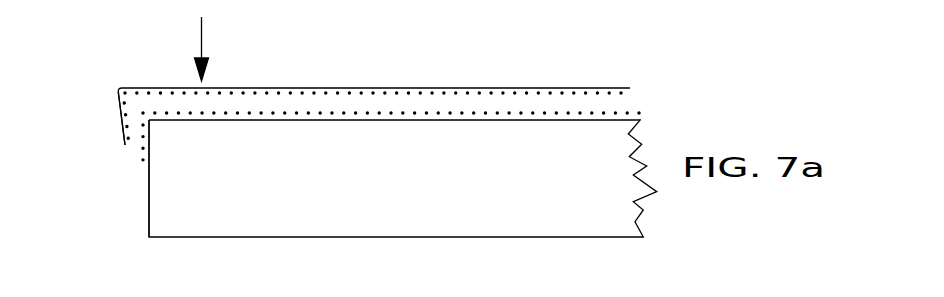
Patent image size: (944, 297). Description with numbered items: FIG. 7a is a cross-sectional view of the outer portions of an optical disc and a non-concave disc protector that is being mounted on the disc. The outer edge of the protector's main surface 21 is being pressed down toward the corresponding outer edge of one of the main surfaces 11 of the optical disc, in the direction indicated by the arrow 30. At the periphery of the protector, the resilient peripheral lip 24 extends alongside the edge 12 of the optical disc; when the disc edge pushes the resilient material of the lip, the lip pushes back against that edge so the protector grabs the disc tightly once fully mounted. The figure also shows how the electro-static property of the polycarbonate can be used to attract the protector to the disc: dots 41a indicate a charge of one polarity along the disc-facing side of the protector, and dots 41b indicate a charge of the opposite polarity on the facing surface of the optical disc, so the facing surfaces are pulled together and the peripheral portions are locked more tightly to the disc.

The main surface of optical disc 11 is at (570, 121).
The edge of optical disc 12 is at (148, 188).
The main surface of protector 21 is at (415, 87).
The peripheral lip 24 is at (118, 120).
The arrow 30 is at (214, 49).
The dots indicating charge of one polarity 41a is at (282, 89).
The dots indicating charge of opposite polarity 41b is at (378, 113).